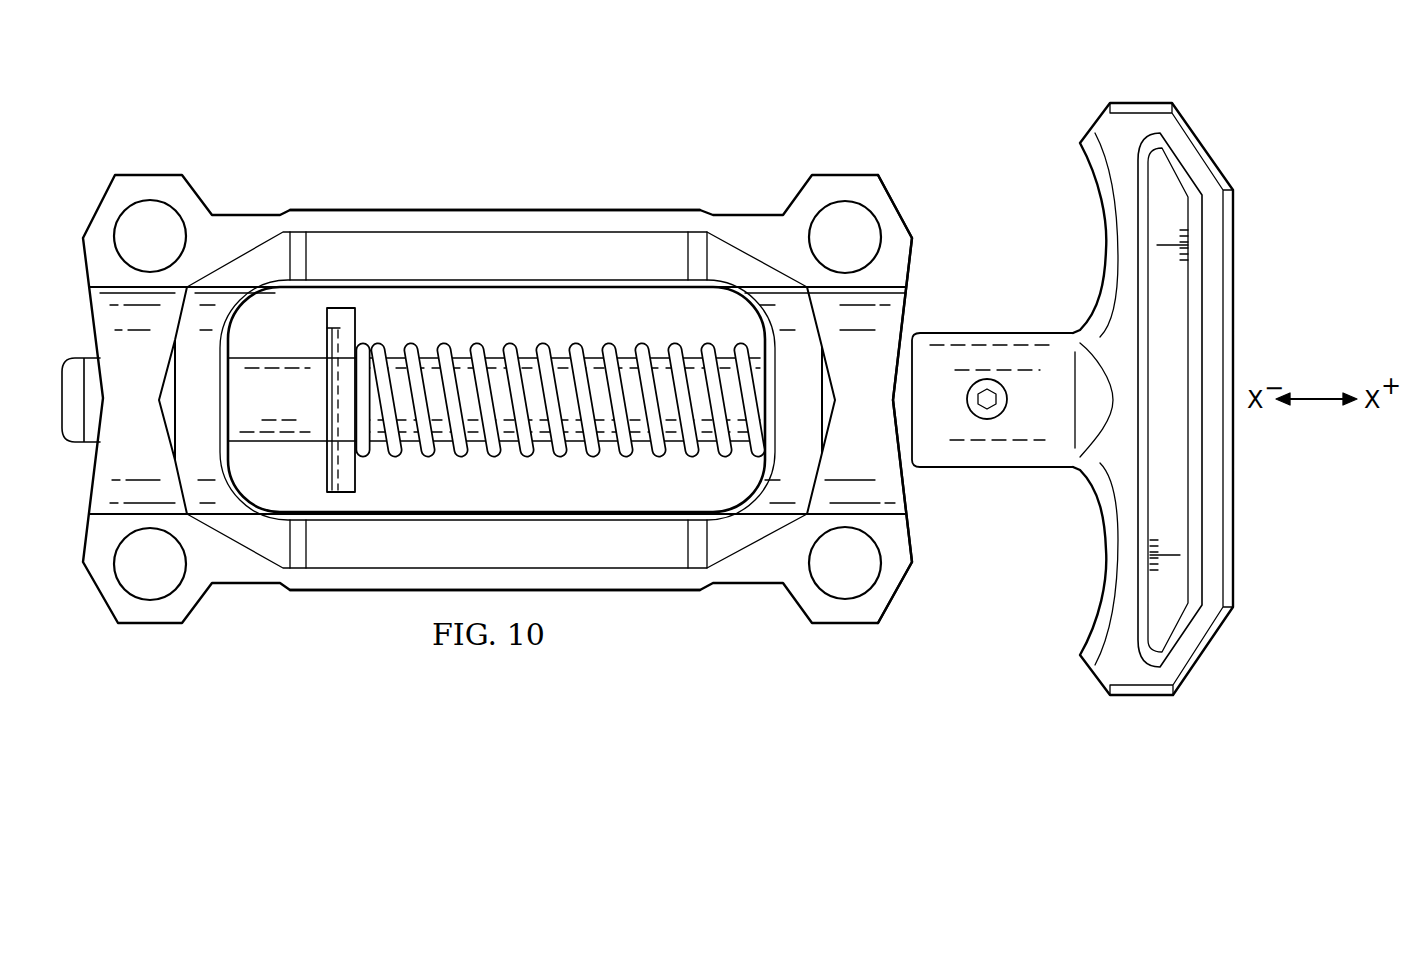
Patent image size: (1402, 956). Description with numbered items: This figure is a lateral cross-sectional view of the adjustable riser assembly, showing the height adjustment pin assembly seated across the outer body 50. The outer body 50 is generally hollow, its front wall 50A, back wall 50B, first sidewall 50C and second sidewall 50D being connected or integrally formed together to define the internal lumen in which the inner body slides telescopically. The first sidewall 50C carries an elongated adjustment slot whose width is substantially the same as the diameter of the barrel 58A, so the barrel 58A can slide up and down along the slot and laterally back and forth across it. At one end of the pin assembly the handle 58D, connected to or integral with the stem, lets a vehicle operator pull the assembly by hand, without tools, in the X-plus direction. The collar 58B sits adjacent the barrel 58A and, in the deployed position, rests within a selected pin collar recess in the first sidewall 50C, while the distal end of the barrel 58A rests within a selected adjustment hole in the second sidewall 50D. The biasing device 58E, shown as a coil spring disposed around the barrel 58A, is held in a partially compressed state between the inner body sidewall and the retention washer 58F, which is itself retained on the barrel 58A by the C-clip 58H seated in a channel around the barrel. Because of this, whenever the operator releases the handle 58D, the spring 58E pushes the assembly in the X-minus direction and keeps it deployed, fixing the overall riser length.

The outer body 50 is at (646, 213).
The front wall 50A is at (350, 591).
The back wall 50B is at (556, 210).
The first sidewall 50C is at (913, 250).
The second sidewall 50D is at (92, 470).
The barrel 58A is at (305, 357).
The collar 58B is at (920, 330).
The handle 58D is at (1140, 102).
The biasing device 58E is at (478, 345).
The retention washer 58F is at (345, 307).
The C-clip 58H is at (330, 452).